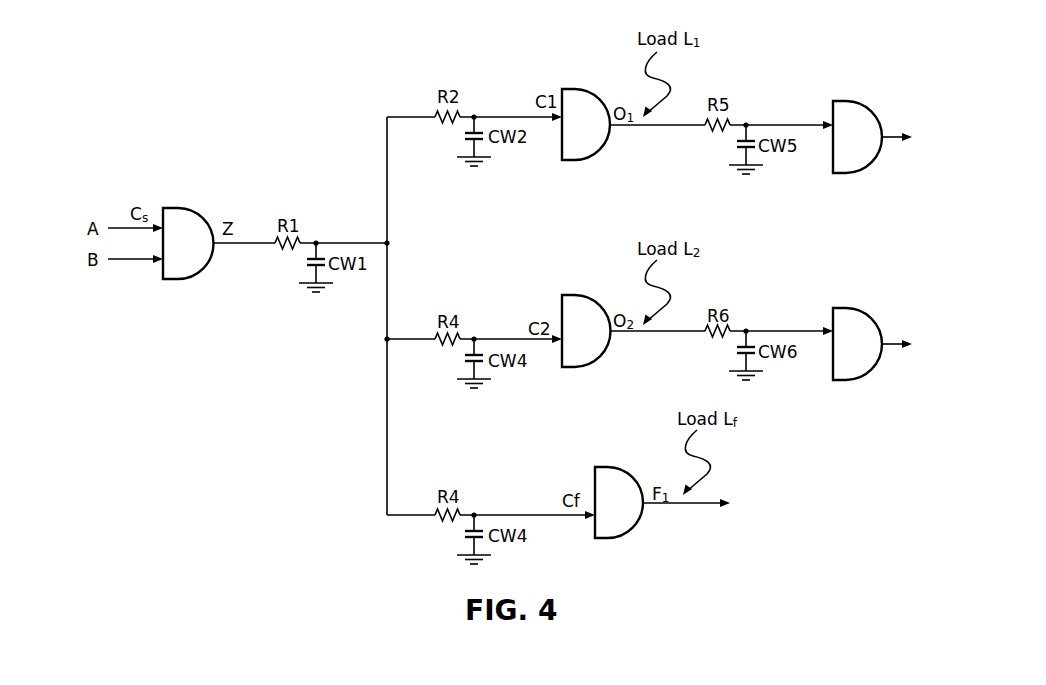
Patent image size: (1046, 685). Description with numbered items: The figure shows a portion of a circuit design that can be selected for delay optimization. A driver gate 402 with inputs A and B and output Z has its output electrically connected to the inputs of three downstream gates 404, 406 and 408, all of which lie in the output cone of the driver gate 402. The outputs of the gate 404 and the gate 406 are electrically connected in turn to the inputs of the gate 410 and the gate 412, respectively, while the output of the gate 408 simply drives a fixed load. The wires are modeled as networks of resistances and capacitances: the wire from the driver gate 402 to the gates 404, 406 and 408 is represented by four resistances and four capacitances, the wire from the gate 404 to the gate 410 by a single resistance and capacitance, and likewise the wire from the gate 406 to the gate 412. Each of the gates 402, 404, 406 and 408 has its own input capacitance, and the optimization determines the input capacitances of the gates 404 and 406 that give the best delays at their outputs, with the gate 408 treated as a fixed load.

The driver gate 402 is at (188, 234).
The gate 404 is at (586, 121).
The gate 406 is at (586, 328).
The gate 408 is at (619, 502).
The gate 410 is at (857, 123).
The gate 412 is at (857, 331).